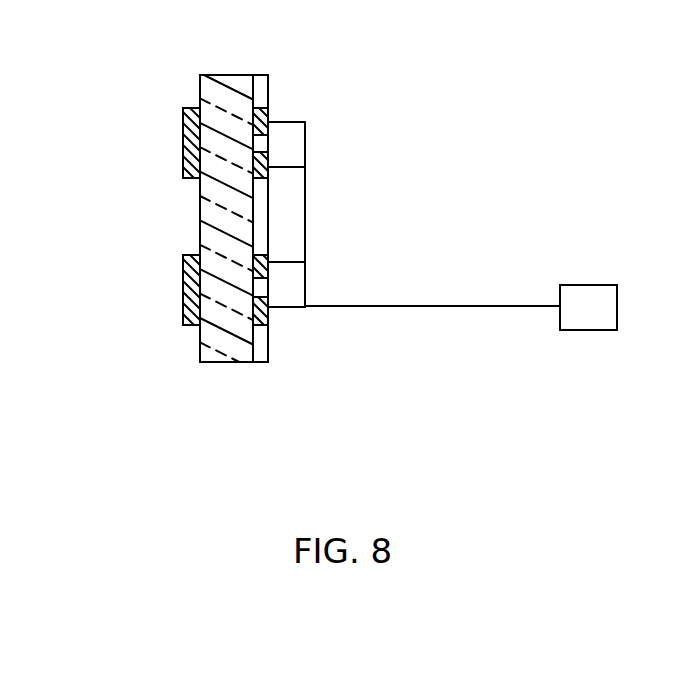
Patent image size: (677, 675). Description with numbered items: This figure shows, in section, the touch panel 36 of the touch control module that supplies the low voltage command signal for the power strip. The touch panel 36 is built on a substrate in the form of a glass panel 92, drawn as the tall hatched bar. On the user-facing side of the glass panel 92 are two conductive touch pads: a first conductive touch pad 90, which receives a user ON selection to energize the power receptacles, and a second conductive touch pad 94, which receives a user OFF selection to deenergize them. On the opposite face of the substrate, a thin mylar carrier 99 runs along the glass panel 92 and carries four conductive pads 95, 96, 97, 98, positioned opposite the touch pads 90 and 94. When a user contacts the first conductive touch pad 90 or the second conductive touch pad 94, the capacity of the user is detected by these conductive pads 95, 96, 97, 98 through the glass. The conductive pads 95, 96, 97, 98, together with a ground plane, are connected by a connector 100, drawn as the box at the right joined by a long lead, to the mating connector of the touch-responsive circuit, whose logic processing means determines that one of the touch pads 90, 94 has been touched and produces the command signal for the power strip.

The touch panel 36 is at (236, 74).
The first conductive touch pad 90 is at (184, 124).
The glass panel 92 is at (200, 352).
The second conductive touch pad 94 is at (184, 275).
The conductive pad 95 is at (270, 110).
The conductive pad 96 is at (270, 157).
The conductive pad 97 is at (270, 257).
The conductive pad 98 is at (270, 302).
The mylar carrier 99 is at (264, 362).
The connector 100 is at (588, 285).